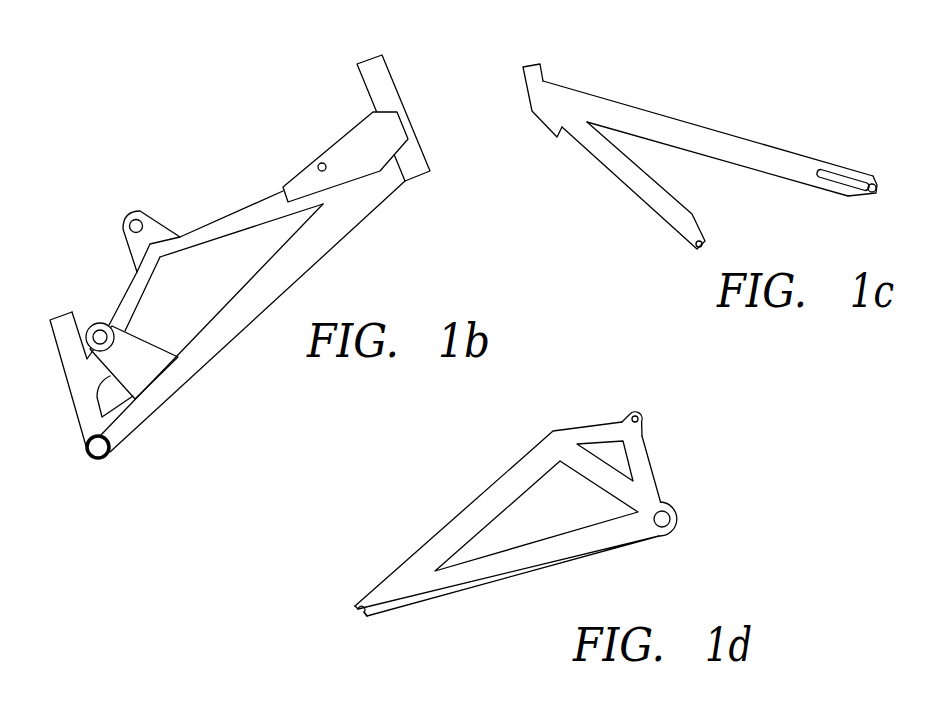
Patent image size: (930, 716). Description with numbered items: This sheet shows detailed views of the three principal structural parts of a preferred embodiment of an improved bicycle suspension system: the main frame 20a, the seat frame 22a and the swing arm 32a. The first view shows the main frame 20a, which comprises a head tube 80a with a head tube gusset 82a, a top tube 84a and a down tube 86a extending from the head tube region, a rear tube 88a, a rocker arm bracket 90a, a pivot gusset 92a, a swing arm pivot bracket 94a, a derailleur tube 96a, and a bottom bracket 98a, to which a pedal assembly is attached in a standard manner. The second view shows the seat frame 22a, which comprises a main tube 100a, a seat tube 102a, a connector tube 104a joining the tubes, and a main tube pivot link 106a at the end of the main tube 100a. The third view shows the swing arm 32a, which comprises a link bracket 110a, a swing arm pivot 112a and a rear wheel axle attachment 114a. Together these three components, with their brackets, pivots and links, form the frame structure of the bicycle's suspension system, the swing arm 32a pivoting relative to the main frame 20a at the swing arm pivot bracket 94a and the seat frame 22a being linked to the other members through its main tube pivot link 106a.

In FIG. 1b, the main frame 20a is at (253, 276).
In FIG. 1b, the head tube 80a is at (397, 84).
In FIG. 1b, the head tube gusset 82a is at (345, 137).
In FIG. 1b, the top tube 84a is at (228, 214).
In FIG. 1b, the down tube 86a is at (331, 247).
In FIG. 1b, the rear tube 88a is at (120, 295).
In FIG. 1b, the rocker arm bracket 90a is at (133, 213).
In FIG. 1b, the pivot gusset 92a is at (148, 375).
In FIG. 1b, the swing arm pivot bracket 94a is at (90, 325).
In FIG. 1b, the derailleur tube 96a is at (64, 387).
In FIG. 1b, the bottom bracket 98a is at (104, 459).
In FIG. 1c, the seat frame 22a is at (669, 148).
In FIG. 1c, the main tube 100a is at (742, 138).
In FIG. 1c, the seat tube 102a is at (526, 90).
In FIG. 1c, the connector tube 104a is at (614, 178).
In FIG. 1c, the main tube pivot link 106a is at (858, 211).
In FIG. 1d, the swing arm 32a is at (526, 527).
In FIG. 1d, the link bracket 110a is at (632, 414).
In FIG. 1d, the swing arm pivot 112a is at (674, 534).
In FIG. 1d, the rear wheel axle attachment 114a is at (353, 620).